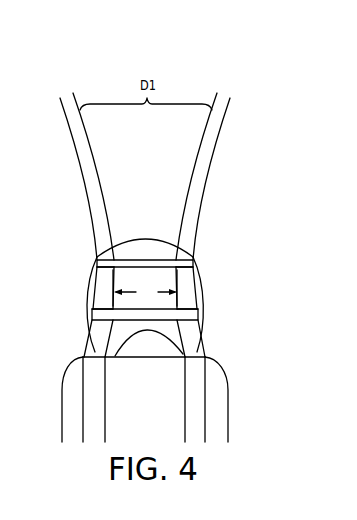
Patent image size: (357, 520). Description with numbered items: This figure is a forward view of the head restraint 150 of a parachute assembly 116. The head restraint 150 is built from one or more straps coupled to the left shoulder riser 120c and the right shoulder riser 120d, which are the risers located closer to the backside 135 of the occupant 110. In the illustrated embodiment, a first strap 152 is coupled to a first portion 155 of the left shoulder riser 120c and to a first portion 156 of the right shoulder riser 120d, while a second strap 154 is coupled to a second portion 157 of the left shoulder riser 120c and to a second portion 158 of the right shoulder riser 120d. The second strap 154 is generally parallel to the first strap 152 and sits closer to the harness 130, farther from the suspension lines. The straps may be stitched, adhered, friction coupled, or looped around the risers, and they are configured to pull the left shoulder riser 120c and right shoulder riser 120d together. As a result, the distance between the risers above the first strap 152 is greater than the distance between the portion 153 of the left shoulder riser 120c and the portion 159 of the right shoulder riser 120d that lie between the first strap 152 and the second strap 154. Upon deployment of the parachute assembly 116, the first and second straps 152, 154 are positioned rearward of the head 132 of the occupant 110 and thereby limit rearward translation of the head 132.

The occupant 110 is at (235, 387).
The parachute assembly 116 is at (82, 66).
The left shoulder riser 120c is at (91, 162).
The right shoulder riser 120d is at (210, 150).
The harness 130 is at (93, 397).
The head 132 is at (160, 248).
The backside 135 is at (152, 406).
The head restraint 150 is at (95, 258).
The first strap 152 is at (130, 260).
The portion of left shoulder riser 153 is at (110, 292).
The second strap 154 is at (157, 313).
The first portion of left shoulder riser 155 is at (110, 269).
The first portion of right shoulder riser 156 is at (183, 269).
The second portion of left shoulder riser 157 is at (102, 310).
The second portion of right shoulder riser 158 is at (183, 310).
The portion of right shoulder riser 159 is at (182, 293).